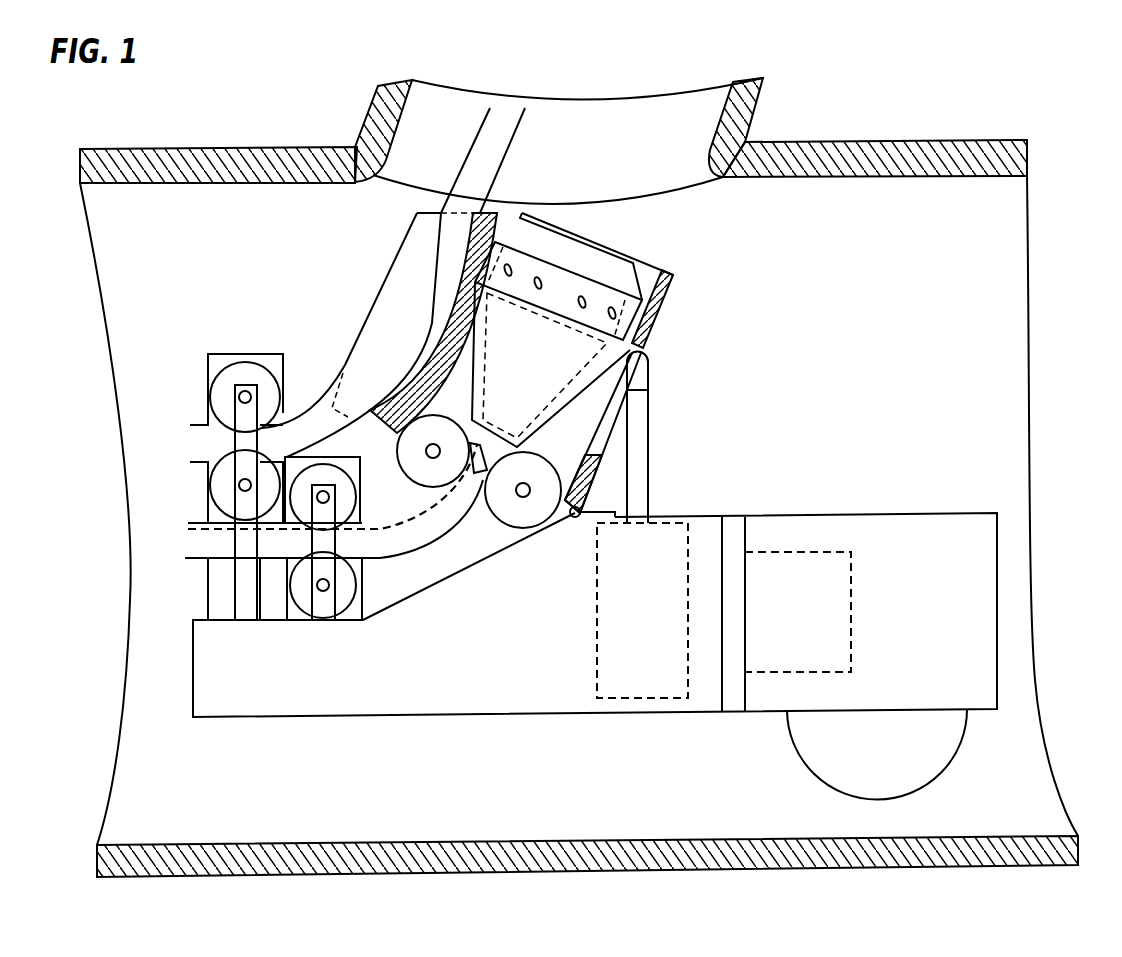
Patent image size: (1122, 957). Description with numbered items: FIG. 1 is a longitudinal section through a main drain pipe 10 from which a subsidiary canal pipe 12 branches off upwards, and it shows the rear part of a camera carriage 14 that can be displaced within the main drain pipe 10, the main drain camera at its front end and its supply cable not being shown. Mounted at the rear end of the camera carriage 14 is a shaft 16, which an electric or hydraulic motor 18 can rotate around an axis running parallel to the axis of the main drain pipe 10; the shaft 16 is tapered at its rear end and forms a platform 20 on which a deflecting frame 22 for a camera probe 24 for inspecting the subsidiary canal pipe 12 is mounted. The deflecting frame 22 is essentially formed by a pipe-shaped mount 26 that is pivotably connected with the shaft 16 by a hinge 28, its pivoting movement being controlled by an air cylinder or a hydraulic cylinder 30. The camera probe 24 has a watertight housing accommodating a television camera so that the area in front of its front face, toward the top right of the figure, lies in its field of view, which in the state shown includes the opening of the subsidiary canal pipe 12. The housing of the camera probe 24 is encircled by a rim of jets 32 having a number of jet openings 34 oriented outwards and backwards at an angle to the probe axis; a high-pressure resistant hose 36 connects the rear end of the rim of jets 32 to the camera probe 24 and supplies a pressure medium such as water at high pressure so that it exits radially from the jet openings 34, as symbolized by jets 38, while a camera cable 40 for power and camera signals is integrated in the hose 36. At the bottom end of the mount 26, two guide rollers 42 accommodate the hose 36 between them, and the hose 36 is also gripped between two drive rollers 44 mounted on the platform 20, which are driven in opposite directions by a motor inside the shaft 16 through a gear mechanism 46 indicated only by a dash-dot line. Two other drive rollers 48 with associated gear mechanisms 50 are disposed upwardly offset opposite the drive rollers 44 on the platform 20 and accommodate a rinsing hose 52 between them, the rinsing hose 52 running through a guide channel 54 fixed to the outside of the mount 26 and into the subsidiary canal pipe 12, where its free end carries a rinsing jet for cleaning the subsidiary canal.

The main drain pipe 10 is at (126, 148).
The subsidiary canal pipe 12 is at (368, 118).
The camera carriage 14 is at (866, 450).
The shaft 16 is at (497, 718).
The motor 18 is at (852, 597).
The platform 20 is at (440, 581).
The deflecting frame 22 is at (744, 323).
The camera probe 24 is at (630, 262).
The pipe-shaped mount 26 is at (652, 335).
The hinge 28 is at (576, 519).
The hydraulic cylinder 30 is at (690, 532).
The rim of jets 32 is at (650, 290).
The jet openings 34 is at (539, 290).
The high-pressure resistant hose 36 is at (391, 600).
The jets 38 is at (472, 255).
The camera cable 40 is at (449, 503).
The guide rollers 42 is at (441, 414).
The drive rollers 44 is at (356, 512).
The gear mechanism 46 is at (323, 458).
The drive rollers 48 is at (214, 390).
The gear mechanisms 50 is at (212, 354).
The rinsing hose 52 is at (517, 128).
The guide channel 54 is at (392, 300).